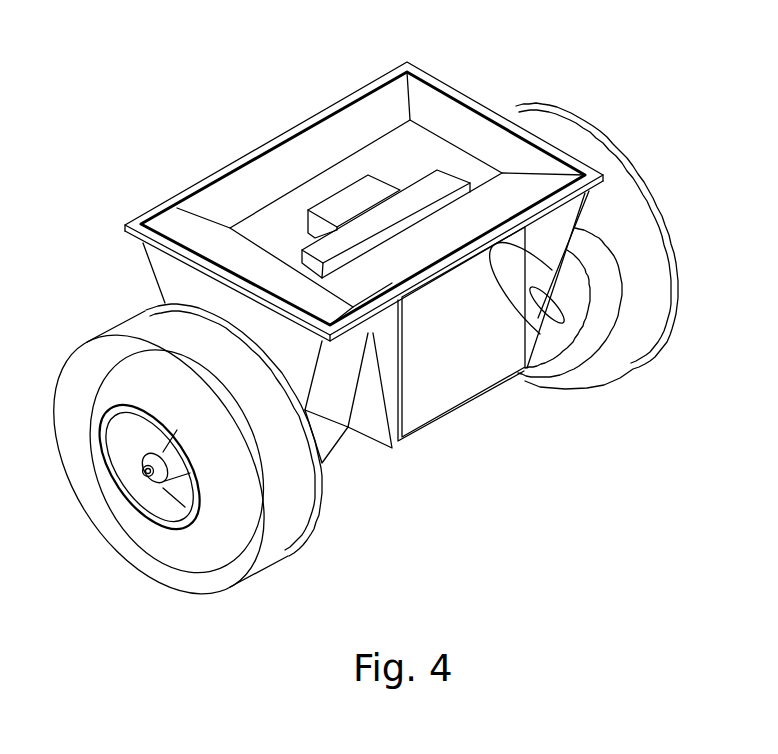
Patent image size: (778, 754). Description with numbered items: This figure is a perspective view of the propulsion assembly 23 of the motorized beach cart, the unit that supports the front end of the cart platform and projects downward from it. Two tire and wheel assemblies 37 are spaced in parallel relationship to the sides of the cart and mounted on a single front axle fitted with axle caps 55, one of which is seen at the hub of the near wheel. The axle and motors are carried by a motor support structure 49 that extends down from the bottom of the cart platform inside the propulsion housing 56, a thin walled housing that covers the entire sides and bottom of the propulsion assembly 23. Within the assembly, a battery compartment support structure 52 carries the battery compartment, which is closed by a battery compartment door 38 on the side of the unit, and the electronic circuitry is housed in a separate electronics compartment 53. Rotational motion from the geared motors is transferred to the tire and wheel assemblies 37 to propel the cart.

The propulsion assembly 23 is at (334, 439).
The tire and wheel assembly 37 is at (648, 344).
The battery compartment door 38 is at (455, 378).
The motor support structure 49 is at (342, 130).
The battery compartment support structure 52 is at (437, 193).
The electronics compartment 53 is at (362, 200).
The axle caps 55 is at (143, 472).
The propulsion housing 56 is at (278, 137).